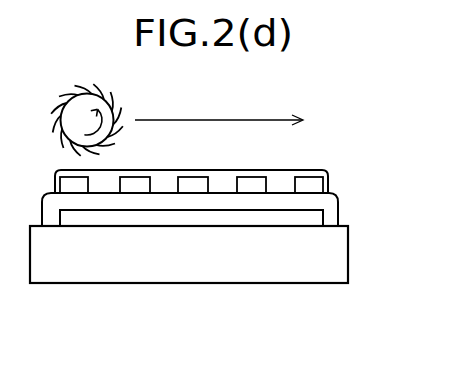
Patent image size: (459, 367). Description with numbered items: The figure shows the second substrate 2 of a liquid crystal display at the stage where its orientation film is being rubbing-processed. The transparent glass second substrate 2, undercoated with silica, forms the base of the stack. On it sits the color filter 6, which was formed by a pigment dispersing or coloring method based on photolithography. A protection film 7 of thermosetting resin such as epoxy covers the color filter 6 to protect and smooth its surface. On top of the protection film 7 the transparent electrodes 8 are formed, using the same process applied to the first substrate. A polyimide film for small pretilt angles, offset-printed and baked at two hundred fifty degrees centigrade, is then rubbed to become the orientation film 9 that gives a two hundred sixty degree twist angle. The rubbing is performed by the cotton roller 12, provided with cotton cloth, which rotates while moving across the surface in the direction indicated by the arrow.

The second substrate 2 is at (203, 268).
The color filter 6 is at (300, 214).
The protection film 7 is at (336, 200).
The transparent electrodes 8 is at (84, 180).
The orientation film 9 is at (222, 184).
The cotton roller 12 is at (71, 98).